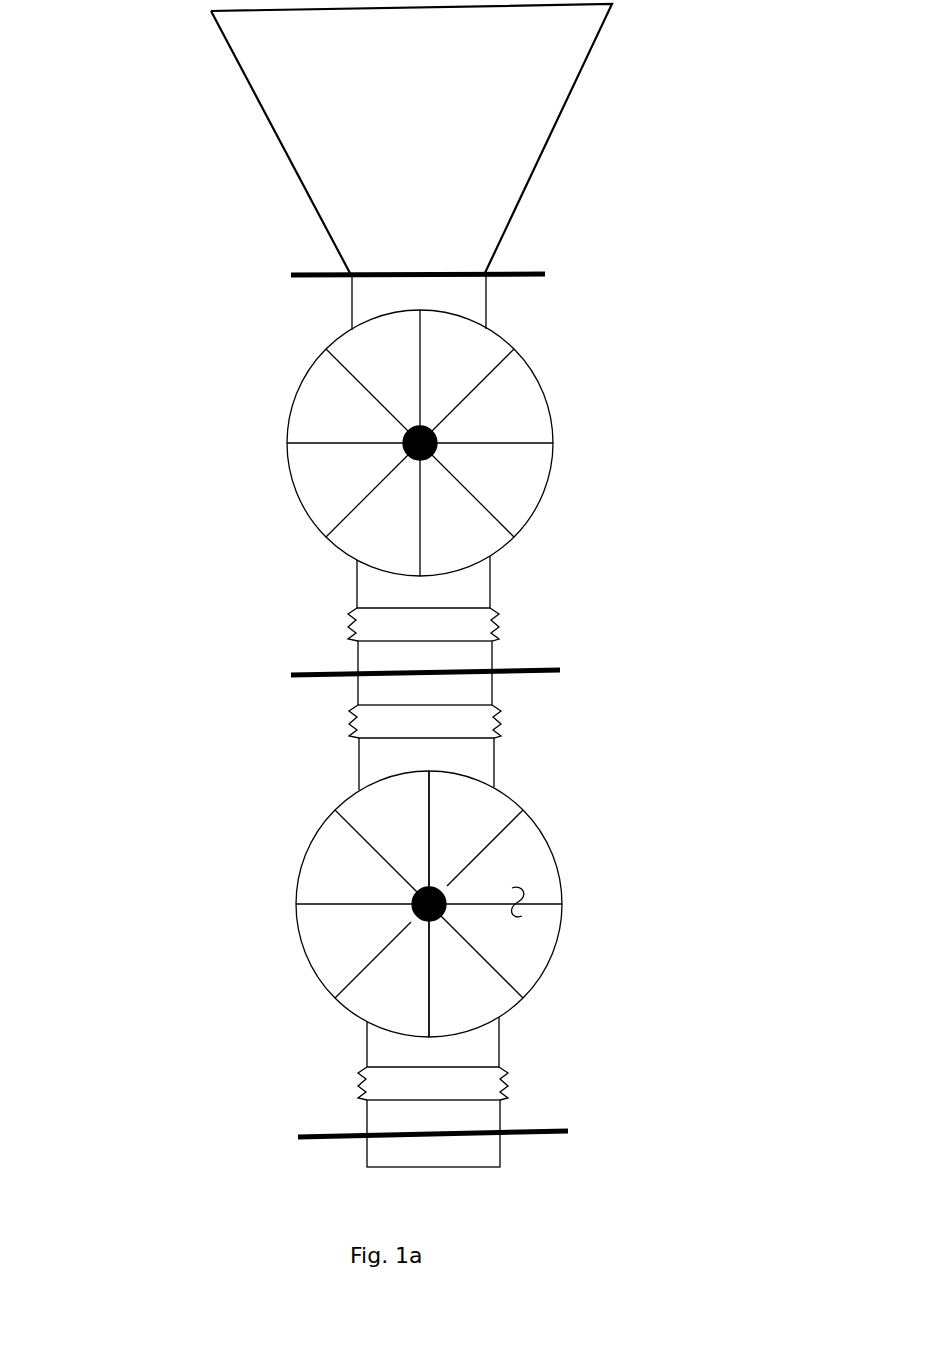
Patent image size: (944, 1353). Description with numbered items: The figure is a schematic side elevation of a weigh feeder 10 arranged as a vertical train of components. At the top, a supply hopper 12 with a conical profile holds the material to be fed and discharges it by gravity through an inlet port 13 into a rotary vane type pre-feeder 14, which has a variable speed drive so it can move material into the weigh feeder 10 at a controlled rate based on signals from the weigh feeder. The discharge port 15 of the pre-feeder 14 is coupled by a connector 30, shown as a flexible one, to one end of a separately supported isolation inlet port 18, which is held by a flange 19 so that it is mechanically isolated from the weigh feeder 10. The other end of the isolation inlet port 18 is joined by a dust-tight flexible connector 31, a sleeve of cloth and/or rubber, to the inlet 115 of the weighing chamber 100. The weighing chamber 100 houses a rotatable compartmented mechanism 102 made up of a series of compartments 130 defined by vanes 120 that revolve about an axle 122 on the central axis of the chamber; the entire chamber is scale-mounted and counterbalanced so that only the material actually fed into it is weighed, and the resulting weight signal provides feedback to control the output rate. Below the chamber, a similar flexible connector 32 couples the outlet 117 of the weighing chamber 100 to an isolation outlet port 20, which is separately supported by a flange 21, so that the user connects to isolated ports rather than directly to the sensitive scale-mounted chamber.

The weigh feeder 10 is at (177, 838).
The supply hopper 12 is at (414, 130).
The inlet port 13 is at (485, 312).
The pre-feeder 14 is at (194, 398).
The discharge port 15 is at (490, 577).
The isolation inlet port 18 is at (493, 658).
The flange 19 is at (560, 668).
The isolation outlet port 20 is at (502, 1155).
The flange 21 is at (553, 1133).
The connector 30 is at (493, 625).
The flexible connector 31 is at (500, 717).
The flexible connector 32 is at (507, 1082).
The weighing chamber 100 is at (557, 950).
The rotatable compartmented mechanism 102 is at (520, 915).
The inlet 115 is at (495, 758).
The outlet 117 is at (500, 1040).
The vanes 120 is at (515, 982).
The axle 122 is at (447, 893).
The compartments 130 is at (478, 827).